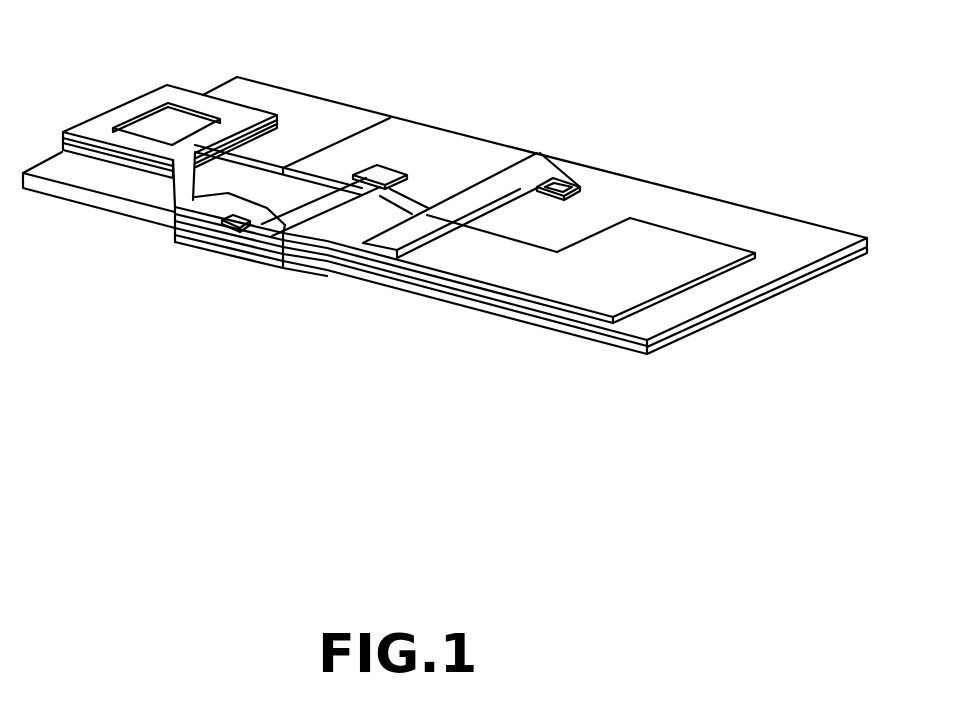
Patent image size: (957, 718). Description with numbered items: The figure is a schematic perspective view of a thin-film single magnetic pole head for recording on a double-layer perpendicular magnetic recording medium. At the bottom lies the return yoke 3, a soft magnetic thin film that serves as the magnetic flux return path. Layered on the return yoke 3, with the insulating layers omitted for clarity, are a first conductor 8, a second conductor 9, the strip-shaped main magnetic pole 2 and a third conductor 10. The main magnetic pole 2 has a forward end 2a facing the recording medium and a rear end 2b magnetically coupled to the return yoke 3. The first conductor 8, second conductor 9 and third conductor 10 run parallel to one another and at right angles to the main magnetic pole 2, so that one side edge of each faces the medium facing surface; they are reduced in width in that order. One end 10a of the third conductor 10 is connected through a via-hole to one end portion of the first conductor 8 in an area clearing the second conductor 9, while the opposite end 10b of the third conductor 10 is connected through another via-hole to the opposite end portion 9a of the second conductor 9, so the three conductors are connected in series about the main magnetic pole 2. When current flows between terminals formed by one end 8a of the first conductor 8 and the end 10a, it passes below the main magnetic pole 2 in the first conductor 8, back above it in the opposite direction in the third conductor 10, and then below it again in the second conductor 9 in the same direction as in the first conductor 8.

The main magnetic pole 2 is at (318, 190).
The forward end 2a is at (227, 221).
The rear end 2b is at (383, 174).
The return yoke 3 is at (573, 327).
The first conductor 8 is at (710, 220).
The one end of the first conductor 8a is at (307, 112).
The second conductor 9 is at (453, 262).
The opposite end portion of the second conductor 9a is at (645, 240).
The third conductor 10 is at (277, 220).
The one end of the third conductor 10a is at (574, 182).
The opposite end of the third conductor 10b is at (158, 120).